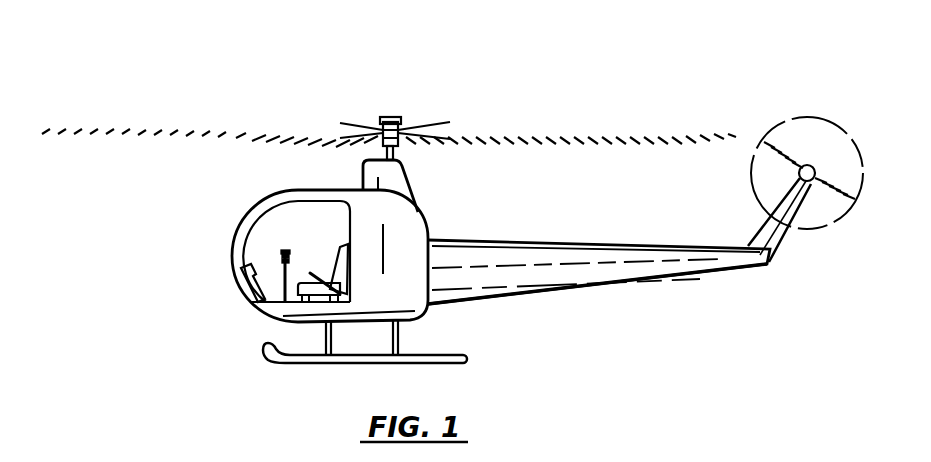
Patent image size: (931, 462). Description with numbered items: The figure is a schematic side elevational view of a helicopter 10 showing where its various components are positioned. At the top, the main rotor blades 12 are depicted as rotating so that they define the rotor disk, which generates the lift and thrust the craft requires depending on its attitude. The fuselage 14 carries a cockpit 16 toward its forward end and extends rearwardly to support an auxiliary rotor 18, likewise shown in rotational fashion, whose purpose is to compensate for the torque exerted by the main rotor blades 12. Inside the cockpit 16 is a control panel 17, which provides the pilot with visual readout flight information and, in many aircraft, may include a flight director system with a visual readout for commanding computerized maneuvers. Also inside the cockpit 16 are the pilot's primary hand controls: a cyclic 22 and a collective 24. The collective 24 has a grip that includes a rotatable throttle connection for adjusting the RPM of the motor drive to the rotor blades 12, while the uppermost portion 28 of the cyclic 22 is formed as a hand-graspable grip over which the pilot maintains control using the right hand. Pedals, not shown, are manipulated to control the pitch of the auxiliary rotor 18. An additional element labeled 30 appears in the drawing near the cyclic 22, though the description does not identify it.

The helicopter 10 is at (582, 99).
The main rotor blades 12 is at (250, 134).
The fuselage 14 is at (427, 220).
The cockpit 16 is at (249, 218).
The control panel 17 is at (248, 282).
The auxiliary rotor 18 is at (800, 117).
The cyclic 22 is at (290, 251).
The collective 24 is at (312, 276).
The uppermost portion of the cyclic 28 is at (290, 256).
The switch 30 is at (283, 262).